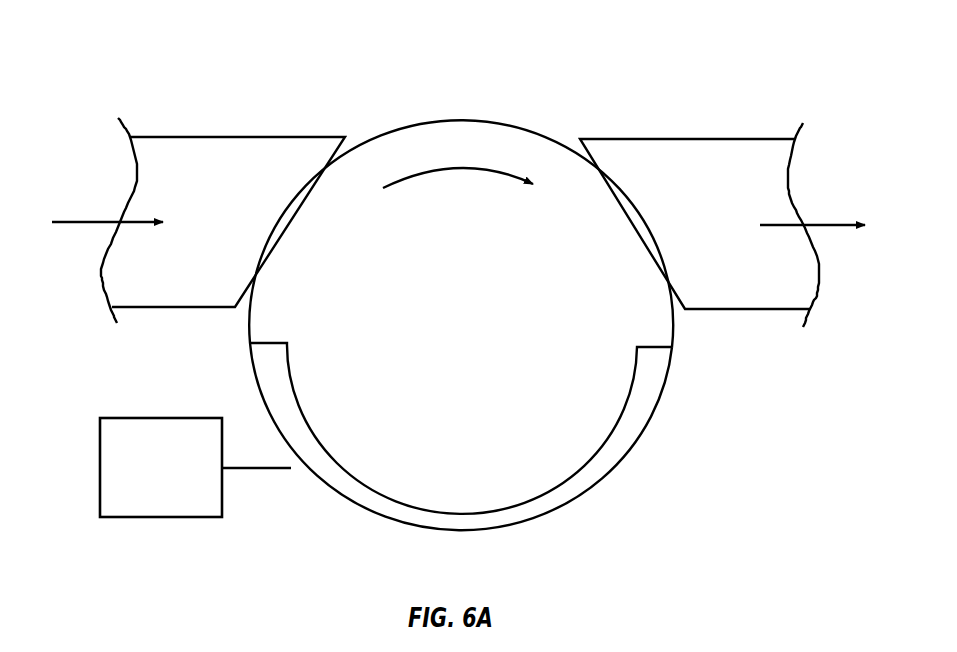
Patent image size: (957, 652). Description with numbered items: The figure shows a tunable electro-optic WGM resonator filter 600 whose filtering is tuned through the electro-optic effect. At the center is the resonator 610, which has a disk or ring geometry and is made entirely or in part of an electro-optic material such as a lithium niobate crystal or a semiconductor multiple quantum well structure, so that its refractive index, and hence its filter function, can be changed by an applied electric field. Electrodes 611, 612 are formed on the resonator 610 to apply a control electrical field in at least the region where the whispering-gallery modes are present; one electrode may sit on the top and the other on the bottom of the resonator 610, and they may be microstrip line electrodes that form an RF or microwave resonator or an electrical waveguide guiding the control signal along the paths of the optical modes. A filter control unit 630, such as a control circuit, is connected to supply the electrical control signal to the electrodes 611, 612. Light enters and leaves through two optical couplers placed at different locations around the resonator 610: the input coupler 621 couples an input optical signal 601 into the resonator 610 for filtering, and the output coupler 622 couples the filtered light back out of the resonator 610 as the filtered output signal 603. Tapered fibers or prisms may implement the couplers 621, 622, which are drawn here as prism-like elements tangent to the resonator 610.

The tunable electro-optic WGM resonator filter 600 is at (176, 60).
The input optical signal 601 is at (78, 221).
The output optical signal 603 is at (820, 224).
The resonator 610 is at (481, 379).
The electrode 611 is at (657, 392).
The electrode 612 is at (549, 436).
The input coupler 621 is at (222, 137).
The output coupler 622 is at (665, 139).
The filter control unit 630 is at (122, 418).